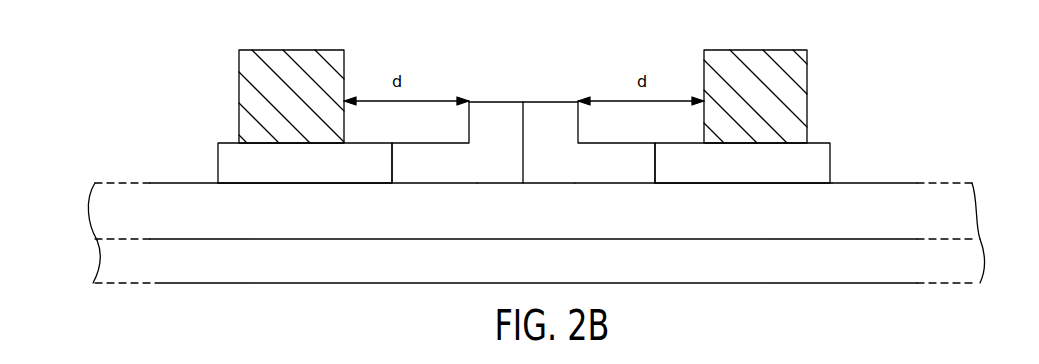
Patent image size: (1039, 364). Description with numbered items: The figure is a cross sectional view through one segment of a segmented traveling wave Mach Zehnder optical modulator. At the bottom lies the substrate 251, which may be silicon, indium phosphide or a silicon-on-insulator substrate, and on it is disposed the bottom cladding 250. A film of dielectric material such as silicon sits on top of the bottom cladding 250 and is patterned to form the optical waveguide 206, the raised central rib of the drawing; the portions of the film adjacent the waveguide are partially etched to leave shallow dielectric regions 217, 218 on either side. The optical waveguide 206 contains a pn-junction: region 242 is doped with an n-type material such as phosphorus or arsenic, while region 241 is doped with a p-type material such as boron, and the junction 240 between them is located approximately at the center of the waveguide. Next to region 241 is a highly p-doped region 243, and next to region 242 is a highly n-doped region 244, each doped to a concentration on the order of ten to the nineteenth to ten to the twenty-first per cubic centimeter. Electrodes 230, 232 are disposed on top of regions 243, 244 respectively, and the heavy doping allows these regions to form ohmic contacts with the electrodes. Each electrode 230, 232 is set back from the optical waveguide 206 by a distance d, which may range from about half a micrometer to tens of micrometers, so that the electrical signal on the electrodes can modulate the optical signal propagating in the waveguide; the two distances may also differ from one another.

The optical waveguide 206 is at (472, 90).
The shallow dielectric region 217 is at (221, 193).
The shallow dielectric region 218 is at (832, 193).
The electrode 230 is at (290, 50).
The electrode 232 is at (758, 50).
The junction 240 is at (524, 148).
The p-doped region 241 is at (417, 163).
The n-doped region 242 is at (625, 152).
The highly p-doped region 243 is at (218, 160).
The highly n-doped region 244 is at (819, 142).
The bottom cladding 250 is at (885, 200).
The substrate 251 is at (975, 260).